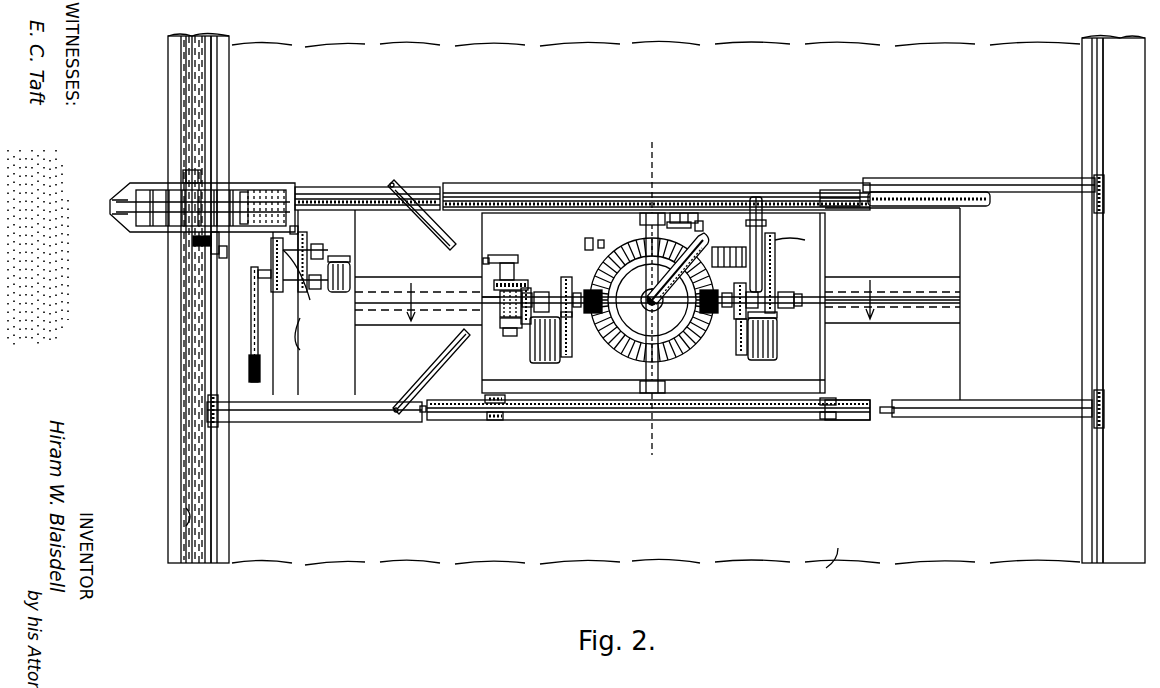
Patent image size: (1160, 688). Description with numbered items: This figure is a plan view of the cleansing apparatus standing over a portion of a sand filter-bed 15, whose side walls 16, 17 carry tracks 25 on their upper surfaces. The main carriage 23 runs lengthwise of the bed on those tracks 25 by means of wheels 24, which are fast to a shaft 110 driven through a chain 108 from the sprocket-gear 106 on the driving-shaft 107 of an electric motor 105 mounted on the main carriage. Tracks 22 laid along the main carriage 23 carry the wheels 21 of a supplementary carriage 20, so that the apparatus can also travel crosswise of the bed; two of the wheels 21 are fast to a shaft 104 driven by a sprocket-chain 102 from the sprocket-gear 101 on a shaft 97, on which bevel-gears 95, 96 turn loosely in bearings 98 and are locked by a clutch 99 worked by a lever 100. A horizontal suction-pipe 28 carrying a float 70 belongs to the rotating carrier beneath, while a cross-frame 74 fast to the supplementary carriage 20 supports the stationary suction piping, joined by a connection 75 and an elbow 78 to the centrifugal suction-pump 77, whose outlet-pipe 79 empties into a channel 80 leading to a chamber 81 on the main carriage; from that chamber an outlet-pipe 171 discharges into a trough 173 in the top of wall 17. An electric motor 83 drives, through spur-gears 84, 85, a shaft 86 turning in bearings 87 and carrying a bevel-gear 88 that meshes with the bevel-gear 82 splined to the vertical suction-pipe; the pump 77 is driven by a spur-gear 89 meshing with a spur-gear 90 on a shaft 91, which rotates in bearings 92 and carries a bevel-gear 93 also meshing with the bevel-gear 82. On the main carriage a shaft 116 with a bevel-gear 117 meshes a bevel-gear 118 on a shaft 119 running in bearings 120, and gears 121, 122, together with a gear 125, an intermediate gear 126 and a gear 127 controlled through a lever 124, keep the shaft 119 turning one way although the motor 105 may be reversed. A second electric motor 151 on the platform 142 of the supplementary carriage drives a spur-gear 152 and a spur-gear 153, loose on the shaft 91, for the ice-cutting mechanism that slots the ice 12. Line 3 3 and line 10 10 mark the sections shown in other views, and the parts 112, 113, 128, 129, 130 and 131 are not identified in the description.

The section line 3 is at (649, 297).
The section line 10 is at (1015, 298).
The ice 12 is at (814, 568).
The sand filter-bed 15 is at (653, 359).
The side wall 16 is at (1082, 113).
The side wall 17 is at (229, 106).
The supplementary carriage 20 is at (825, 372).
The wheels 21 is at (865, 388).
The tracks 22 is at (855, 420).
The main carriage 23 is at (1000, 417).
The wheels 24 is at (1116, 430).
The tracks 25 is at (1116, 390).
The horizontal suction-pipe 28 is at (921, 342).
The float 70 is at (388, 287).
The cross-frame 74 is at (646, 383).
The connection 75 is at (630, 308).
The centrifugal suction-pump 77 is at (775, 268).
The elbow 78 is at (730, 243).
The outlet-pipe 79 is at (762, 225).
The channel 80 is at (512, 188).
The chamber 81 is at (255, 183).
The bevel-gear 82 is at (662, 385).
The electric motor 83 is at (552, 363).
The spur-gear 84 is at (572, 338).
The spur-gear 85 is at (572, 265).
The shaft 86 is at (541, 292).
The bearings 87 is at (582, 270).
The bevel-gear 88 is at (600, 315).
The spur-gear 89 is at (805, 240).
The spur-gear 90 is at (830, 342).
The shaft 91 is at (802, 300).
The bearings 92 is at (720, 345).
The bevel-gear 93 is at (700, 300).
The bevel-gear 95 is at (432, 347).
The bevel-gear 96 is at (494, 285).
The shaft 97 is at (508, 336).
The bearings 98 is at (455, 355).
The clutch 99 is at (521, 322).
The lever 100 is at (500, 305).
The sprocket-gear 101 is at (505, 255).
The sprocket-chain 102 is at (483, 261).
The shaft 104 is at (498, 440).
The electric motor 105 is at (350, 285).
The sprocket-gear 106 is at (273, 280).
The driving-shaft 107 is at (350, 262).
The chain 108 is at (260, 368).
The shaft 110 is at (423, 412).
The saw 112 is at (165, 232).
The ground 113 is at (38, 265).
The shaft 116 is at (215, 254).
The bevel-gear 117 is at (195, 246).
The bevel-gear 118 is at (223, 258).
The shaft 119 is at (323, 252).
The bearings 120 is at (262, 275).
The gear 121 is at (321, 250).
The gear 122 is at (312, 283).
The lever 124 is at (283, 260).
The gear 125 is at (258, 208).
The intermediate gear 126 is at (312, 219).
The gear 127 is at (240, 324).
The bracket 128 is at (298, 356).
The upper rail 129 is at (735, 192).
The bearing 130 is at (716, 240).
The hub 131 is at (641, 300).
The platform 142 is at (777, 360).
The electric motor 151 is at (777, 340).
The spur-gear 152 is at (745, 355).
The spur-gear 153 is at (730, 290).
The outlet-pipe 171 is at (183, 176).
The trough 173 is at (186, 520).